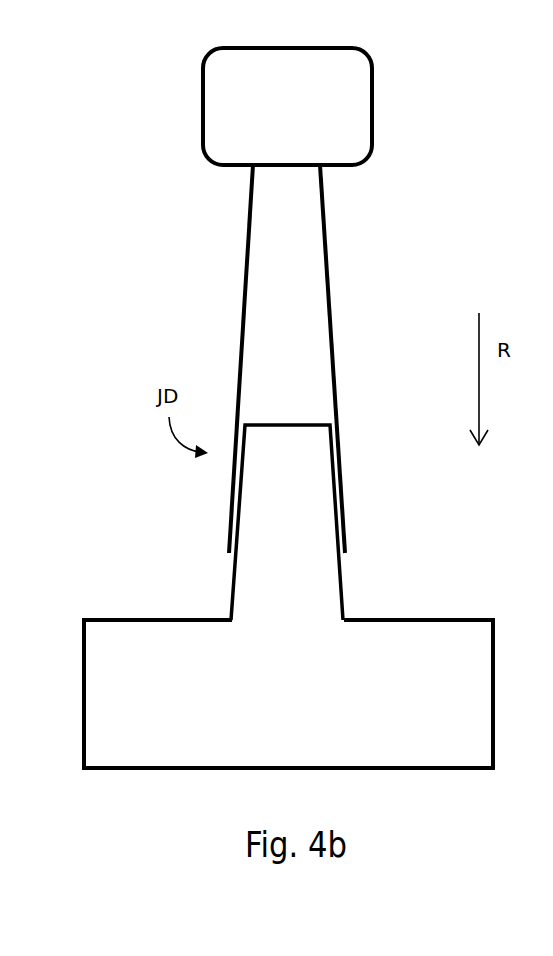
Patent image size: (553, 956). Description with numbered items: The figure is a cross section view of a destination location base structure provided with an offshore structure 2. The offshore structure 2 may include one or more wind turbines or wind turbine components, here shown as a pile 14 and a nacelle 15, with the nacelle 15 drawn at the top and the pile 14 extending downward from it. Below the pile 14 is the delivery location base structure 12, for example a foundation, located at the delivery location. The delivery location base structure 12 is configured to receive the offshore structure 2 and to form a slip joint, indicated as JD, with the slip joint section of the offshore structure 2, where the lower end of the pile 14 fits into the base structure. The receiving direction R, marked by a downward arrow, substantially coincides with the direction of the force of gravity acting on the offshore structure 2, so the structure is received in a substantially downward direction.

The offshore structure 2 is at (444, 152).
The delivery location base structure 12 is at (140, 683).
The pile 14 is at (265, 263).
The nacelle 15 is at (225, 113).